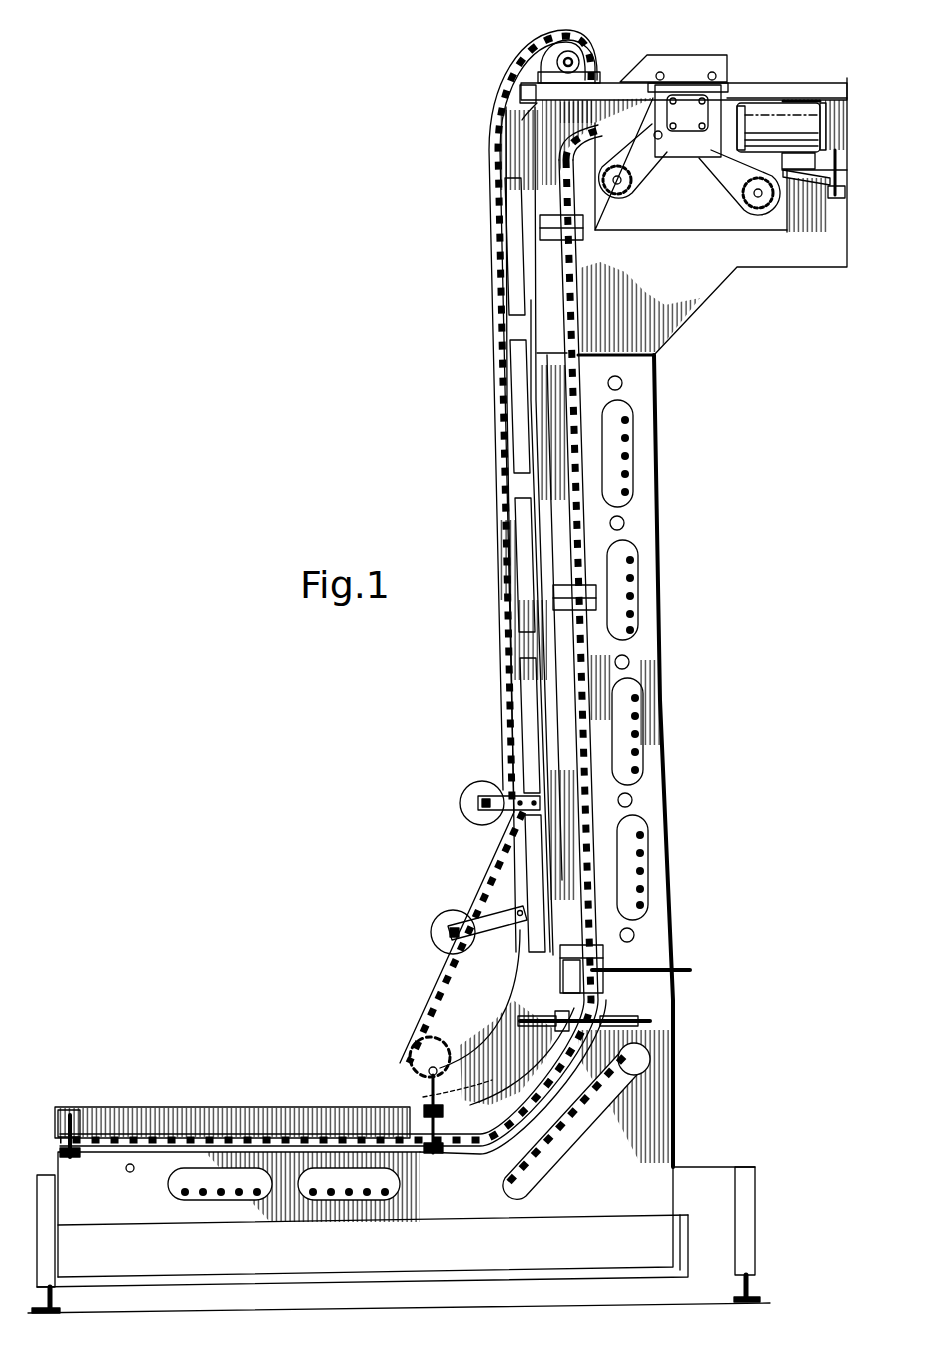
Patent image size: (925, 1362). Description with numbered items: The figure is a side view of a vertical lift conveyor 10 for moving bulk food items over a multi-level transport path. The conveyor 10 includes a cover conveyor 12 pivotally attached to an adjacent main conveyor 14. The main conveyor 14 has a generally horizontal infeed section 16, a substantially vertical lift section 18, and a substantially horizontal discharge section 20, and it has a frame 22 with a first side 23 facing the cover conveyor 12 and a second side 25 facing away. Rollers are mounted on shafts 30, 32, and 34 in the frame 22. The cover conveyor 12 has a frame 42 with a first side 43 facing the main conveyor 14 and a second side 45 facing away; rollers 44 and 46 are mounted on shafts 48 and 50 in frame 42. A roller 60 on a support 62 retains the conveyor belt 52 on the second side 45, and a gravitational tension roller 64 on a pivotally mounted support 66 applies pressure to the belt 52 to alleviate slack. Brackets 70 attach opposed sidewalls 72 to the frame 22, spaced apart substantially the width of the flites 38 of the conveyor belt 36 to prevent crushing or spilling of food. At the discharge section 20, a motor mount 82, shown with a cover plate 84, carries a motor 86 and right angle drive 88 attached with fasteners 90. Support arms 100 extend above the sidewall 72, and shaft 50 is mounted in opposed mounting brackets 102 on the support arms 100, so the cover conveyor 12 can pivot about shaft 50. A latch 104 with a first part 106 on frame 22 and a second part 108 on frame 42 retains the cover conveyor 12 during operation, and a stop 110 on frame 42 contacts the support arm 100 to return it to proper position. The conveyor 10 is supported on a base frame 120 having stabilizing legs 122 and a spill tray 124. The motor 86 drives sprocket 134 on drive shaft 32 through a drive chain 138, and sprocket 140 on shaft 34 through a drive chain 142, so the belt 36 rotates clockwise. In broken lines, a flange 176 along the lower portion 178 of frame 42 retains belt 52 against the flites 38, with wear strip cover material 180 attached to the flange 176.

The vertical lift conveyor 10 is at (282, 126).
The cover conveyor 12 is at (497, 345).
The main conveyor 14 is at (660, 440).
The infeed section 16 is at (175, 1138).
The lift section 18 is at (600, 540).
The discharge section 20 is at (790, 195).
The frame 22 is at (655, 720).
The first side 23 is at (598, 655).
The second side 25 is at (664, 795).
The shaft 30 is at (130, 1162).
The drive shaft 32 is at (620, 215).
The shaft 34 is at (765, 215).
The conveyor belt 36 is at (640, 858).
The flites 38 is at (150, 1233).
The frame 42 is at (524, 648).
The first side 43 is at (525, 265).
The roller 44 is at (398, 1068).
The second side 45 is at (492, 300).
The roller 46 is at (552, 42).
The shaft 48 is at (405, 1080).
The shaft 50 is at (570, 50).
The conveyor belt 52 is at (503, 420).
The roller 60 is at (462, 803).
The support 62 is at (498, 790).
The gravitational tension roller 64 is at (440, 925).
The support 66 is at (490, 912).
The bracket 70 is at (545, 226).
The sidewalls 72 is at (552, 497).
The motor mount 82 is at (710, 55).
The cover plate 84 is at (675, 235).
The motor 86 is at (795, 110).
The right angle drive 88 is at (716, 105).
The fasteners 90 is at (662, 72).
The support arms 100 is at (545, 100).
The mounting brackets 102 is at (557, 62).
The latch 104 is at (640, 972).
The first part 106 is at (650, 1020).
The second part 108 is at (517, 1023).
The stop 110 is at (530, 92).
The base frame 120 is at (698, 1167).
The stabilizing legs 122 is at (45, 1185).
The spill tray 124 is at (686, 1250).
The sprocket 134 is at (640, 200).
The drive chain 138 is at (652, 160).
The sprocket 140 is at (742, 210).
The drive chain 142 is at (712, 175).
The flange 176 is at (462, 1145).
The lower portion 178 is at (425, 1050).
The wear strip cover material 180 is at (480, 1150).